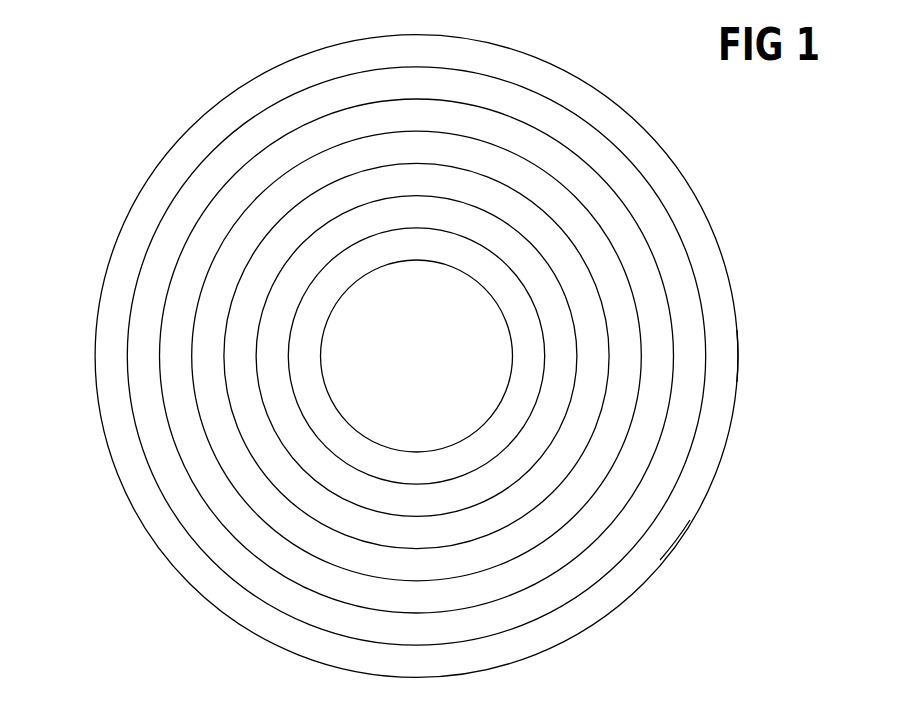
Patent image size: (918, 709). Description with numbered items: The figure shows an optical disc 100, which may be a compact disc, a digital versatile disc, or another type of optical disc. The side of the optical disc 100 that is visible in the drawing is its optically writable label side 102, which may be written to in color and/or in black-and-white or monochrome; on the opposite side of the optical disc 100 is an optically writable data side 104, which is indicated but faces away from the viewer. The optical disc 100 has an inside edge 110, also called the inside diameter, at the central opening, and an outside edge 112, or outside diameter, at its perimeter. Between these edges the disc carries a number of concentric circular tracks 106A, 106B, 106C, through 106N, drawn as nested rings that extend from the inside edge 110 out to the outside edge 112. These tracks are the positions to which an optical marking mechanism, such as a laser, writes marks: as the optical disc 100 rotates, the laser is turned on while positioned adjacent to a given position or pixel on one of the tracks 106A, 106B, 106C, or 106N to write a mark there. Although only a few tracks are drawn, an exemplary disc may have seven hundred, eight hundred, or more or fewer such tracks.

The optical disc 100 is at (86, 96).
The optically writable label side 102 is at (310, 68).
The optically writable data side 104 is at (714, 535).
The concentric circular track 106A is at (442, 474).
The concentric circular track 106B is at (442, 506).
The concentric circular track 106C is at (442, 538).
The concentric circular track 106N is at (442, 635).
The inside edge 110 is at (512, 368).
The outside edge 112 is at (739, 367).